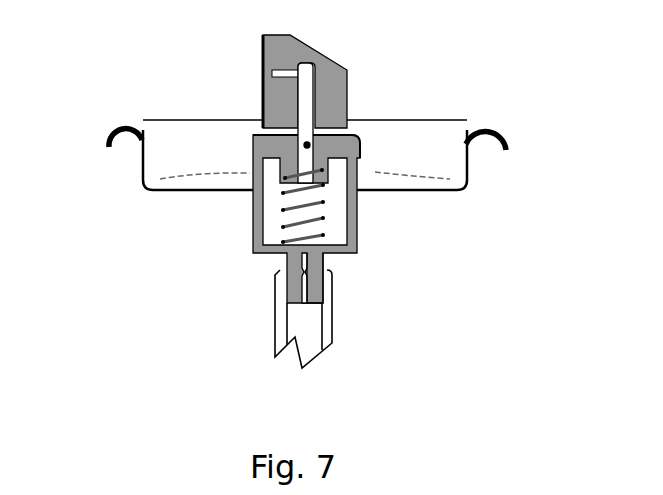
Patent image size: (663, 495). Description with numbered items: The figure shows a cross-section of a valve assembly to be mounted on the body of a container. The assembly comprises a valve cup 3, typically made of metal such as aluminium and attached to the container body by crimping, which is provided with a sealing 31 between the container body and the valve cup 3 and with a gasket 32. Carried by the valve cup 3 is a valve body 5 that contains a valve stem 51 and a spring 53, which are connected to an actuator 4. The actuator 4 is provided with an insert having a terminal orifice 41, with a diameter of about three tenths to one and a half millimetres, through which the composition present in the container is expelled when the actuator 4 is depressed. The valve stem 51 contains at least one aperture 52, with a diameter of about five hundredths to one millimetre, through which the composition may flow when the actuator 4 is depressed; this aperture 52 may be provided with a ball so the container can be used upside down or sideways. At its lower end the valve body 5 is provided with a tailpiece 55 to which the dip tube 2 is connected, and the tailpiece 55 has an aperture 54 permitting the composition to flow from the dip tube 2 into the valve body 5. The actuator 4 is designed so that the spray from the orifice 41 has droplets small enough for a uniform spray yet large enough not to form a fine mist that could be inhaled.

The dip tube 2 is at (278, 331).
The valve cup 3 is at (513, 128).
The sealing 31 is at (125, 139).
The gasket 32 is at (254, 139).
The actuator 4 is at (312, 46).
The terminal orifice 41 is at (261, 75).
The valve body 5 is at (258, 238).
The valve stem 51 is at (324, 155).
The aperture 52 is at (316, 132).
The spring 53 is at (284, 210).
The aperture 54 is at (301, 272).
The tailpiece 55 is at (326, 270).